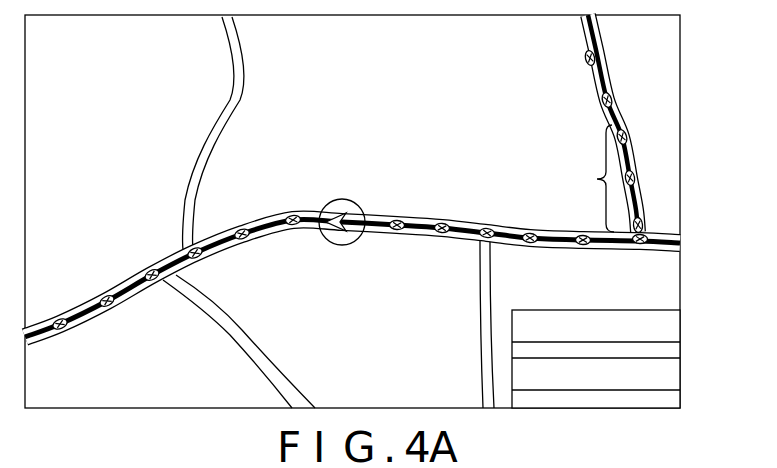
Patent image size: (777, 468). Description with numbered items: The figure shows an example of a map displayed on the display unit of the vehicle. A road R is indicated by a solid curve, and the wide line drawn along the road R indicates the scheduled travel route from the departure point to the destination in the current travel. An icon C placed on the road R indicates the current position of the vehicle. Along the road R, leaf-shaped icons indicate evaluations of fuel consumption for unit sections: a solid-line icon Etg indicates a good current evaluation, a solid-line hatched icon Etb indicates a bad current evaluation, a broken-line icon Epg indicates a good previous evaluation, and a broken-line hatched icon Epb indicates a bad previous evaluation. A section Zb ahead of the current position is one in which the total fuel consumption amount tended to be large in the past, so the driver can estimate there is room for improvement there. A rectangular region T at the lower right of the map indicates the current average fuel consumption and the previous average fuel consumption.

The road R is at (272, 217).
The icon indicating current position of vehicle C is at (333, 198).
The solid-line hatched icon Etb is at (107, 294).
The solid-line icon Etg is at (67, 332).
The broken-line icon Epg is at (580, 63).
The broken-line hatched icon Epb is at (638, 127).
The section Zb is at (588, 178).
The rectangular region T is at (678, 310).